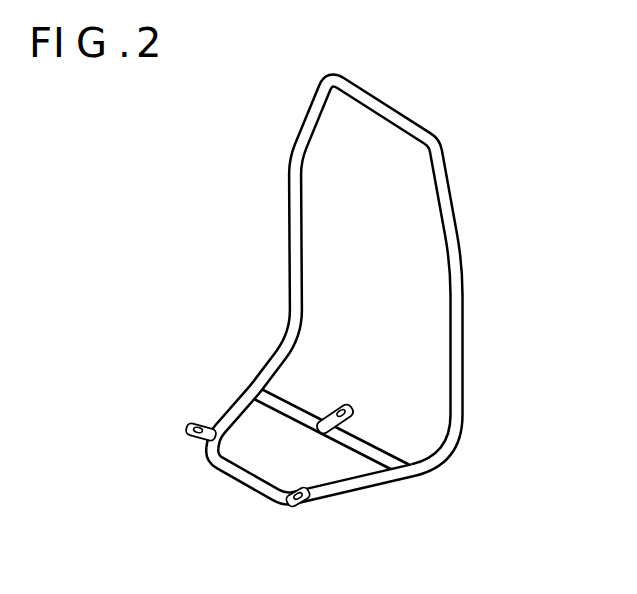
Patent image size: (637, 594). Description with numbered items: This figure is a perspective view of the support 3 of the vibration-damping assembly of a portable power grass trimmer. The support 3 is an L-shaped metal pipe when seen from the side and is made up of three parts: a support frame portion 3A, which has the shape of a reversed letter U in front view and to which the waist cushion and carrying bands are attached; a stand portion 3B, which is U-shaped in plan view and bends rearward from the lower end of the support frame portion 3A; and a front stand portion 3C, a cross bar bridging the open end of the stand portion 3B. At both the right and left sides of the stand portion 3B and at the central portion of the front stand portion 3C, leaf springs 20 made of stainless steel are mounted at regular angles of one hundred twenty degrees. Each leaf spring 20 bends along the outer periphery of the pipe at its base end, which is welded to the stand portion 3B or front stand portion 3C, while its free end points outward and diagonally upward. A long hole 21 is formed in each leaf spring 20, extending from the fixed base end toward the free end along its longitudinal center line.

The support 3 is at (291, 149).
The support frame portion 3A is at (460, 308).
The stand portion 3B is at (348, 497).
The front stand portion 3C is at (293, 411).
The leaf spring 20 is at (352, 413).
The long hole 21 is at (342, 408).